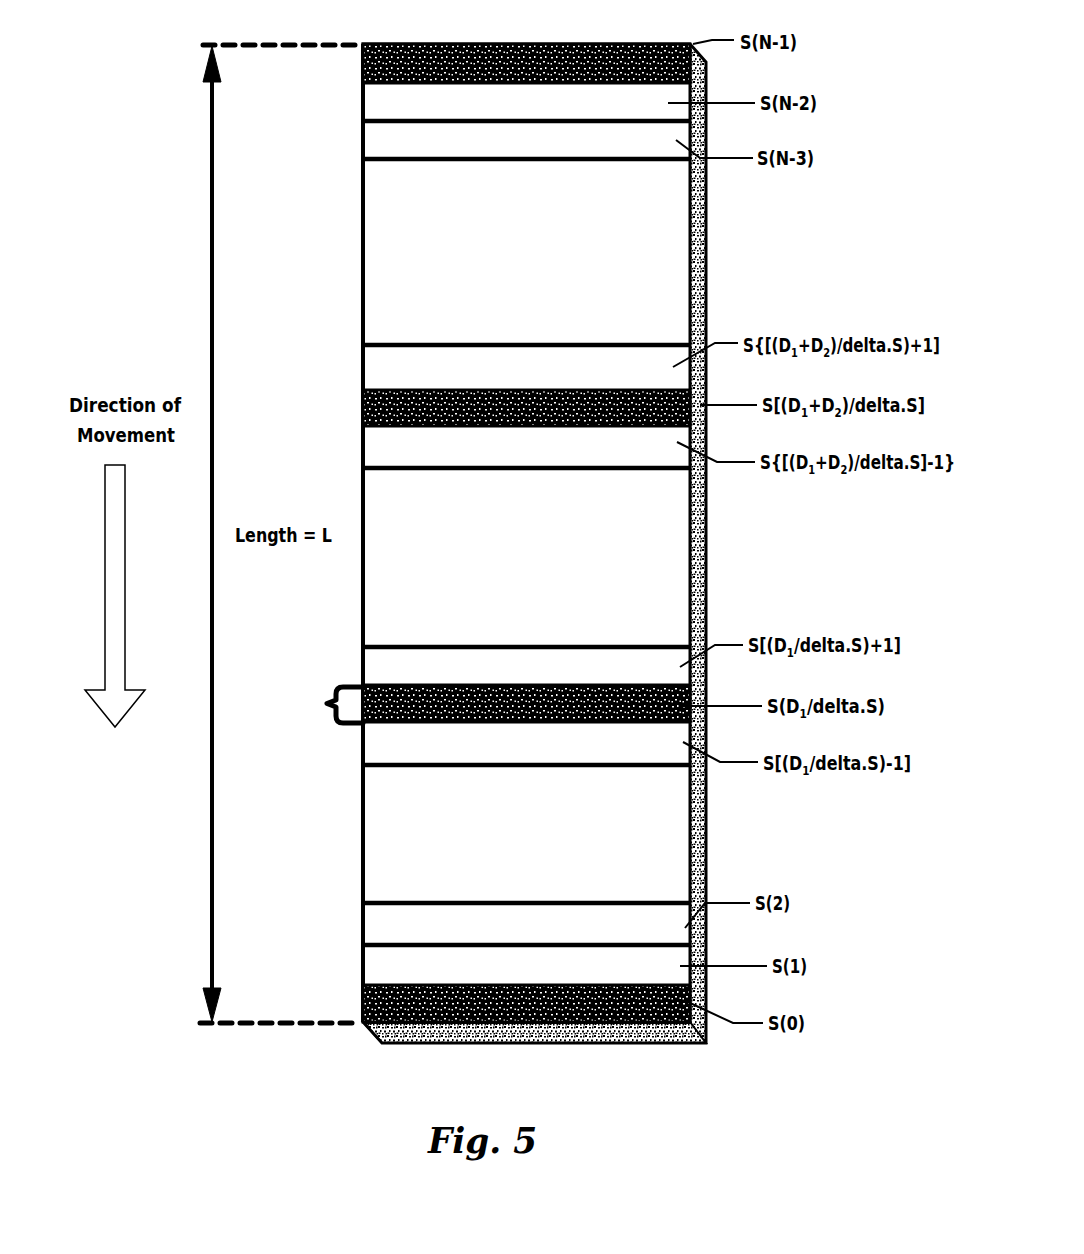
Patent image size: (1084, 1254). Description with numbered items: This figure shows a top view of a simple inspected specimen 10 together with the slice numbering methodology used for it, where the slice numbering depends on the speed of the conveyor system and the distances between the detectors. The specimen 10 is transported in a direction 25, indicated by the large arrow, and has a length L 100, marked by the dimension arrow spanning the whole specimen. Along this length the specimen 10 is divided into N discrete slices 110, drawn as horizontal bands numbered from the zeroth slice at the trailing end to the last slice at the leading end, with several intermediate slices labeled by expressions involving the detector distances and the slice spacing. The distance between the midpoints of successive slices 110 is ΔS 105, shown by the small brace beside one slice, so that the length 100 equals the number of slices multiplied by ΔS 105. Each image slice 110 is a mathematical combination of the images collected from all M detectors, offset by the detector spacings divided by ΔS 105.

The specimen 10 is at (700, 268).
The direction 25 is at (125, 518).
The length L 100 is at (213, 400).
The ΔS 105 is at (326, 697).
The slices 110 is at (533, 1027).